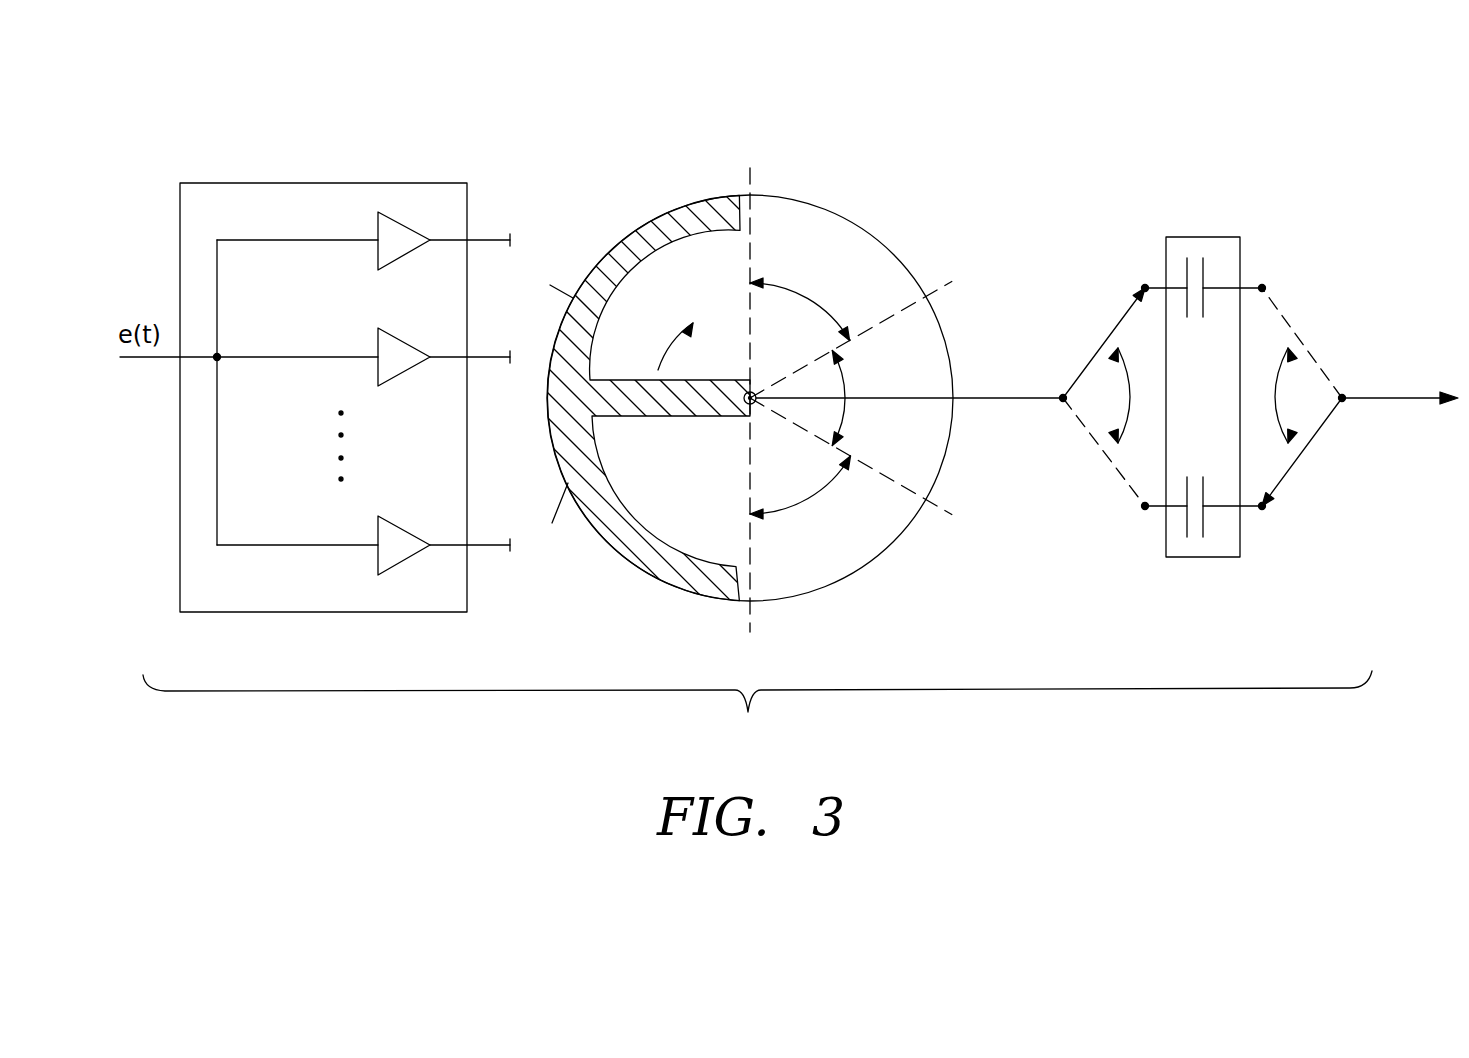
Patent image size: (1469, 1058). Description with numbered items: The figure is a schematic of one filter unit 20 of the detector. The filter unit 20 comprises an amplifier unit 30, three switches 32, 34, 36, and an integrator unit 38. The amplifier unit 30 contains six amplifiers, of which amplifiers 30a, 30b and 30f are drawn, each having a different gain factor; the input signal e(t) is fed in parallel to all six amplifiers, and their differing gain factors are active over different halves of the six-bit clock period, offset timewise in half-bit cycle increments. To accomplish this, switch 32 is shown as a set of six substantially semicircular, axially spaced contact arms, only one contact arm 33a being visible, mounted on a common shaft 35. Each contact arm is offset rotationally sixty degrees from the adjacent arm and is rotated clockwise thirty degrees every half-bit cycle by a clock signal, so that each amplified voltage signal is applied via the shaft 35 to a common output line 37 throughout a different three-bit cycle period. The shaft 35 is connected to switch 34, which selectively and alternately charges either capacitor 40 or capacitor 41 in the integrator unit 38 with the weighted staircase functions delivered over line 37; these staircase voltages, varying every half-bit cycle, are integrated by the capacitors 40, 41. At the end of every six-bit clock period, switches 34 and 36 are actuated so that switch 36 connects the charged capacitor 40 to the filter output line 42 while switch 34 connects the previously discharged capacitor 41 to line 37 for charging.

The filter unit 20 is at (757, 711).
The amplifier unit 30 is at (345, 363).
The amplifier 30a is at (401, 222).
The amplifier 30b is at (401, 339).
The amplifier 30f is at (401, 527).
The switch 32 is at (812, 192).
The contact arm 33a is at (630, 245).
The switch 34 is at (1108, 334).
The common shaft 35 is at (753, 390).
The switch 36 is at (1307, 447).
The common output line 37 is at (1015, 397).
The integrator unit 38 is at (1221, 372).
The capacitor 40 is at (1206, 272).
The capacitor 41 is at (1205, 523).
The filter output line 42 is at (1400, 397).